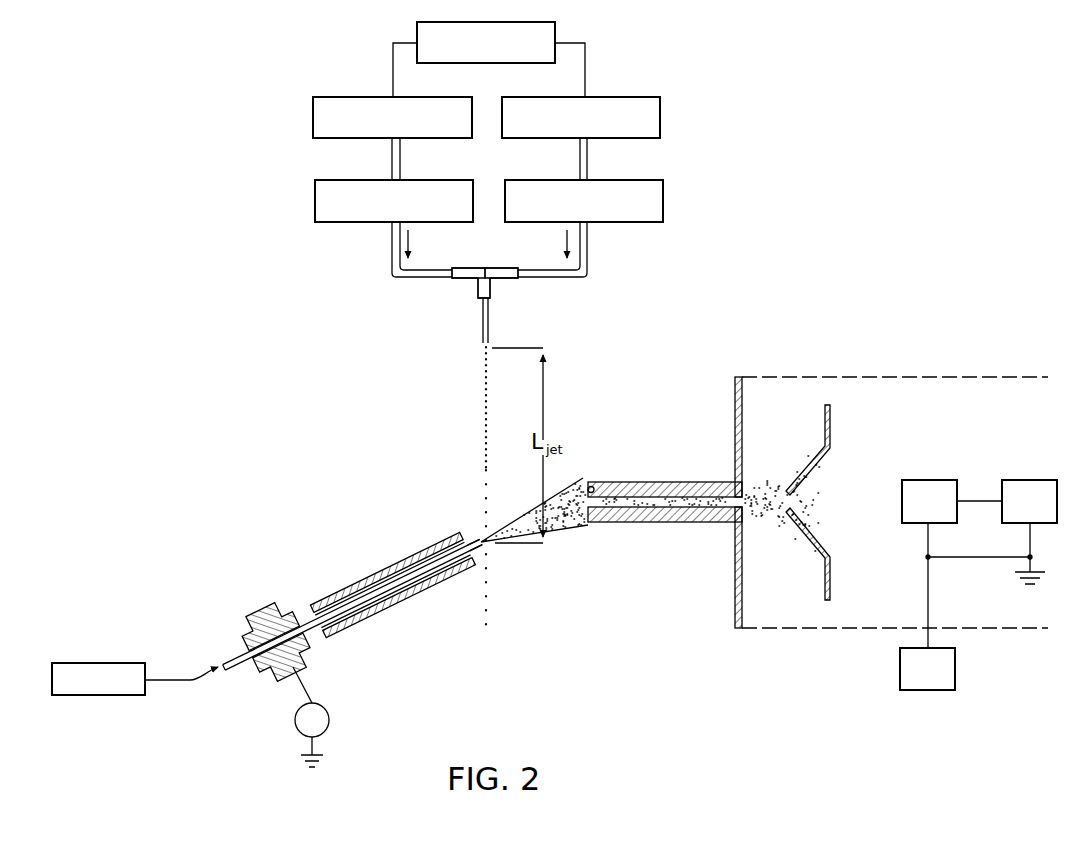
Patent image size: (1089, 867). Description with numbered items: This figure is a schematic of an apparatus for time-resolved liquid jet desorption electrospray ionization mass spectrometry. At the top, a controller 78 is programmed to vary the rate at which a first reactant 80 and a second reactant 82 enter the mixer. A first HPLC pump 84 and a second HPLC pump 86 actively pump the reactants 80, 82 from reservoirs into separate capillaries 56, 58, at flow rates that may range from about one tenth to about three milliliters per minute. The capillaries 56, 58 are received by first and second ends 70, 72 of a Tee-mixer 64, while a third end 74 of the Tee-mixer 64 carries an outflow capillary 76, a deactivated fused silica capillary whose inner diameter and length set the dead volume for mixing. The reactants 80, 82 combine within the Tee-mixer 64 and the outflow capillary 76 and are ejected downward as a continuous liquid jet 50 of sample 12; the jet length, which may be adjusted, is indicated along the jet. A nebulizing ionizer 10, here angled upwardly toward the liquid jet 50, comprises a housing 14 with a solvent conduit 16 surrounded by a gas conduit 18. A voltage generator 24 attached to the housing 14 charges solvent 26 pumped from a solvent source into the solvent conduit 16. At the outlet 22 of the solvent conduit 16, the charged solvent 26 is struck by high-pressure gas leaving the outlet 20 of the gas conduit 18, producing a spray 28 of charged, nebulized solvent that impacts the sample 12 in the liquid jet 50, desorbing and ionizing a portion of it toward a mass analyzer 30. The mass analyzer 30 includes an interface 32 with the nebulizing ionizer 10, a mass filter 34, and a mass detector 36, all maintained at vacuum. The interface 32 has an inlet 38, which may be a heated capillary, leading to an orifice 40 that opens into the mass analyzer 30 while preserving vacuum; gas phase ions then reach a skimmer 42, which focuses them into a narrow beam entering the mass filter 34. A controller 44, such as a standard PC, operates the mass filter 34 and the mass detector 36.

The nebulizing ionizer 10 is at (181, 572).
The sample 12 is at (480, 383).
The housing 14 is at (260, 610).
The solvent conduit 16 is at (235, 652).
The gas conduit 18 is at (360, 582).
The outlet of the gas conduit 20 is at (477, 566).
The outlet of the solvent conduit 22 is at (478, 537).
The voltage generator 24 is at (295, 719).
The solvent 26 is at (80, 663).
The spray 28 is at (484, 546).
The mass analyzer 30 is at (939, 362).
The interface 32 is at (671, 550).
The mass filter 34 is at (944, 514).
The mass detector 36 is at (1044, 514).
The inlet 38 is at (655, 507).
The orifice 40 is at (745, 504).
The skimmer 42 is at (832, 421).
The controller 44 is at (942, 682).
The liquid jet 50 is at (466, 433).
The capillary 56 is at (392, 250).
The capillary 58 is at (587, 248).
The Tee-mixer 64 is at (485, 268).
The first end 70 is at (452, 278).
The second end 72 is at (518, 278).
The third end 74 is at (478, 298).
The outflow capillary 76 is at (488, 330).
The controller 78 is at (555, 30).
The first reactant 80 is at (320, 97).
The second reactant 82 is at (645, 97).
The first HPLC pump 84 is at (320, 180).
The second HPLC pump 86 is at (645, 180).